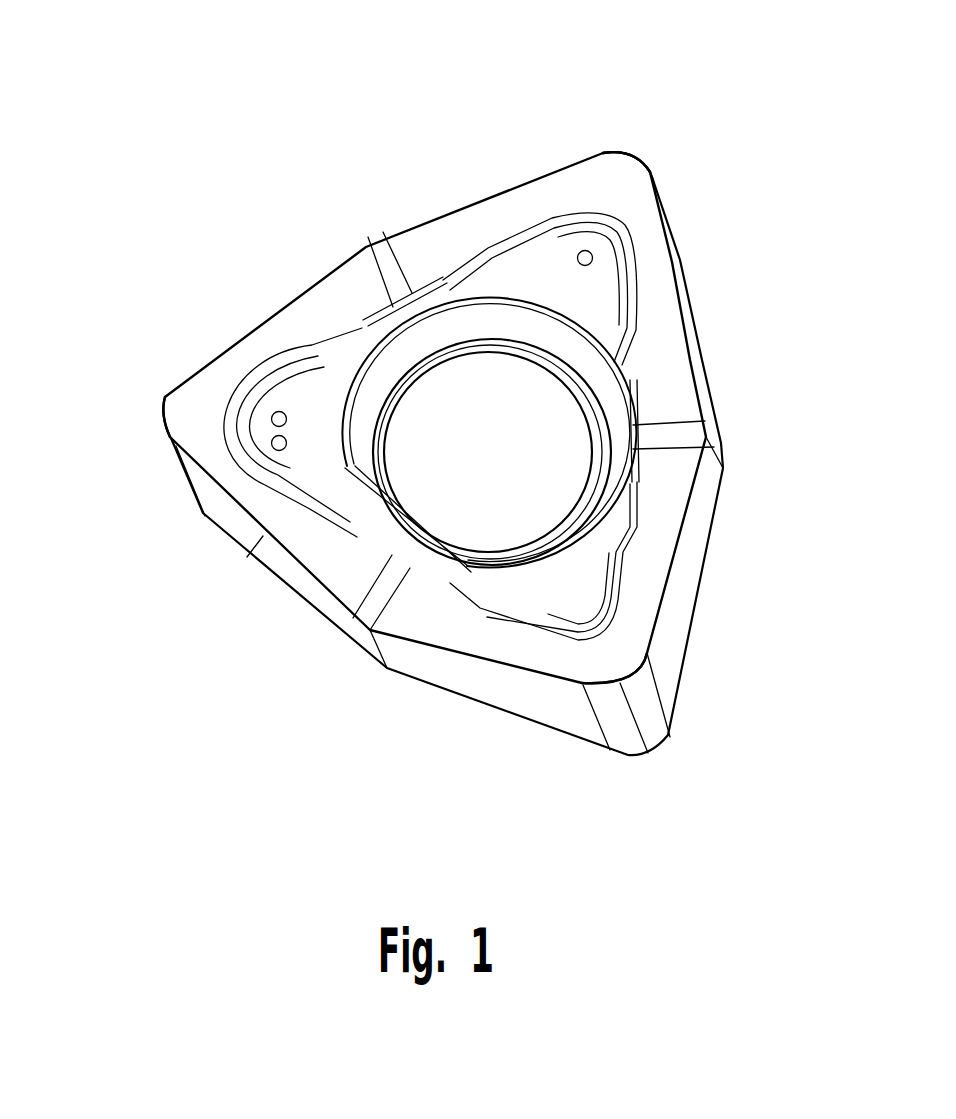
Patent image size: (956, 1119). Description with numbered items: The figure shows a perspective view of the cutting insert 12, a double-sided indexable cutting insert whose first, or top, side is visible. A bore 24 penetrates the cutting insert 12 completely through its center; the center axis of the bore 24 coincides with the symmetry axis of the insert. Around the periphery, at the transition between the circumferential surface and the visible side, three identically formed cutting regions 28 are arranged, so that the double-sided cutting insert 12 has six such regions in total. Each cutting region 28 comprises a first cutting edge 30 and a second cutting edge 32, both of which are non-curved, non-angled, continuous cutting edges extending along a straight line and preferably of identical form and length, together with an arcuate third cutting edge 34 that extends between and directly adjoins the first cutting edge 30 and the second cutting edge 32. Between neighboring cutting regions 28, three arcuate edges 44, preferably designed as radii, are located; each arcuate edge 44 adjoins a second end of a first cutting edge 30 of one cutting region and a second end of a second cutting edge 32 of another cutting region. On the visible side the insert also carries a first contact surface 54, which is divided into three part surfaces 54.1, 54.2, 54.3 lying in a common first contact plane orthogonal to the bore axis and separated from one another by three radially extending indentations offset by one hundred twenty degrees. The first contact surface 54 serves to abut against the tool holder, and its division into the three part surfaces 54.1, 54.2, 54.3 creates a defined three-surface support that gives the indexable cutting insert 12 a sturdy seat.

The cutting insert 12 is at (438, 450).
The bore 24 is at (463, 483).
The cutting region 28 is at (604, 793).
The first cutting edge 30 is at (487, 195).
The second cutting edge 32 is at (262, 322).
The third cutting edge 34 is at (650, 158).
The arcuate edge 44 is at (366, 246).
The first contact surface 54 is at (453, 434).
The first part surface 54.1 is at (570, 577).
The first part surface 54.2 is at (305, 403).
The first part surface 54.3 is at (598, 297).